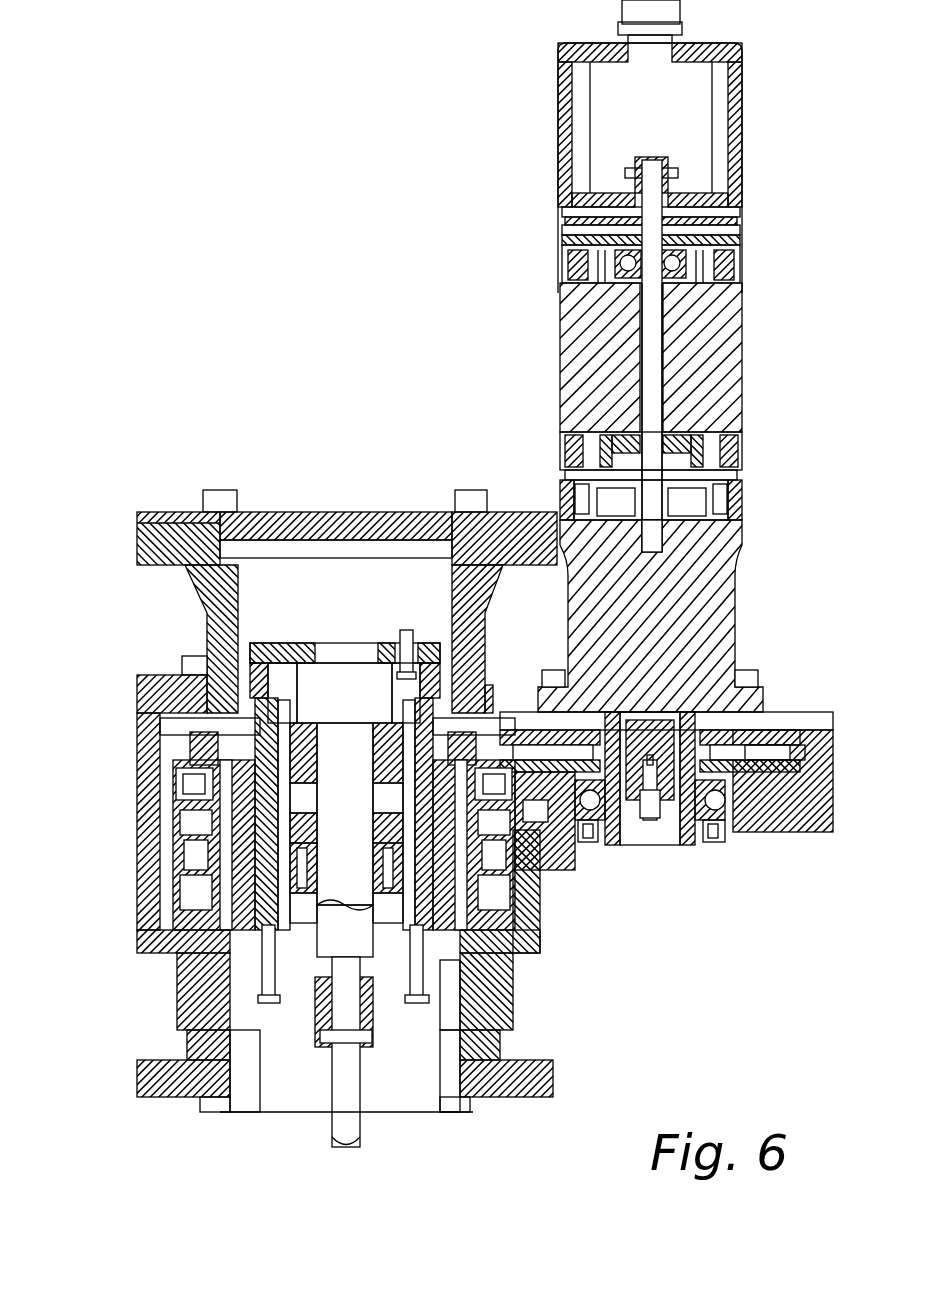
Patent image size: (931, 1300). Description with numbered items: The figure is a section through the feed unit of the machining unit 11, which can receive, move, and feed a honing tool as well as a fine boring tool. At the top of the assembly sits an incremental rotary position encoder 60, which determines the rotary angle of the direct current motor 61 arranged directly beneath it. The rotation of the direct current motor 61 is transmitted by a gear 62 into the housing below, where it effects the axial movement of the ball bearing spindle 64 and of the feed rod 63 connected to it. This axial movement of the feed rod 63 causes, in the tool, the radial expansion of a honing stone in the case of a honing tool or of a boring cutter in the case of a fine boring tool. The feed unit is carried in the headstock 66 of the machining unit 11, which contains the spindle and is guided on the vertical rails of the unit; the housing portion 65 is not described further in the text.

The machining unit 11 is at (165, 605).
The incremental rotary position encoder 60 is at (690, 118).
The direct current motor 61 is at (722, 357).
The gear 62 is at (718, 612).
The feed rod 63 is at (350, 1125).
The ball bearing spindle 64 is at (423, 890).
The right housing portion 65 is at (492, 990).
The headstock 66 is at (155, 845).